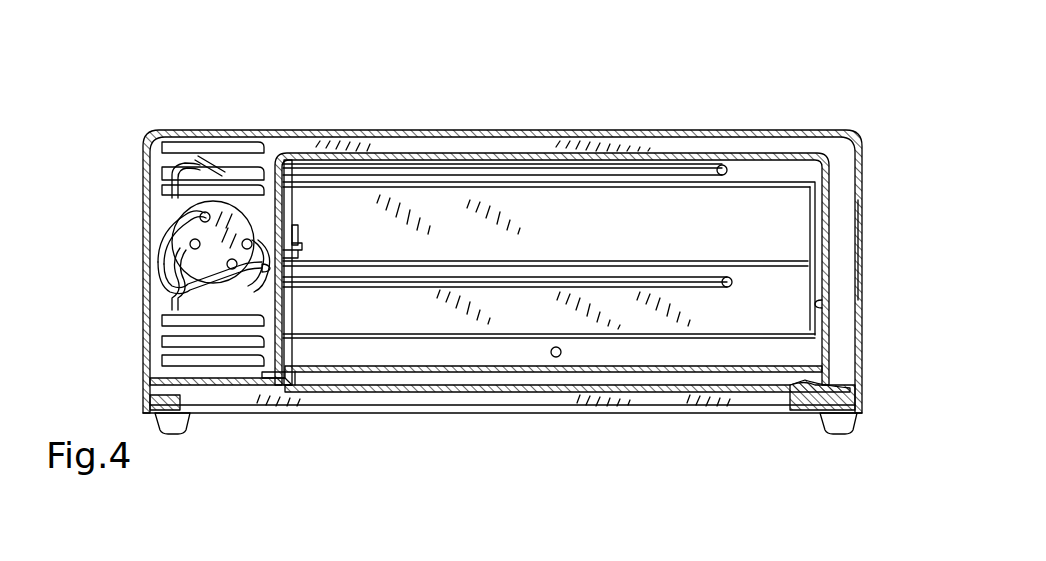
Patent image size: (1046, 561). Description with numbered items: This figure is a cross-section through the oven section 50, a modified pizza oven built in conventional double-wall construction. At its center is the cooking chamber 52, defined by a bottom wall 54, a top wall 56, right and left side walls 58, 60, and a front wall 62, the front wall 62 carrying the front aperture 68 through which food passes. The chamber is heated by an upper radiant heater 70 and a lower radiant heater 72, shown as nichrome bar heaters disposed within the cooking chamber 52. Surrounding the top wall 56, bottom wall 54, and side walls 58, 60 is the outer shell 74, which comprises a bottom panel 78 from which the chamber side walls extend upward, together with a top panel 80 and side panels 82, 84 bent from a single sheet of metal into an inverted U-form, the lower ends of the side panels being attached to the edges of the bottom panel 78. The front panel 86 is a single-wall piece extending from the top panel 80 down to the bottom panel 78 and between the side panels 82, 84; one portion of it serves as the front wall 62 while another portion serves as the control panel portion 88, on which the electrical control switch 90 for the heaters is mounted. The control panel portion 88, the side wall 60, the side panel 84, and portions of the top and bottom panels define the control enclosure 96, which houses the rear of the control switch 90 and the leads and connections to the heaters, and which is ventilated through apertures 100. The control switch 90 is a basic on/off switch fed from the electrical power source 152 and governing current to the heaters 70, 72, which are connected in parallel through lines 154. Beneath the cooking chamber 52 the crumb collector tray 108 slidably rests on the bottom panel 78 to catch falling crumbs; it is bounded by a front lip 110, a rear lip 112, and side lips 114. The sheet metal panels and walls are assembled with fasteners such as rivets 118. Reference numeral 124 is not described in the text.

The oven section 50 is at (762, 100).
The cooking chamber 52 is at (823, 130).
The bottom wall 54 is at (442, 405).
The top wall 56 is at (786, 130).
The right side wall 58 is at (300, 130).
The left side wall 60 is at (822, 304).
The front wall 62 is at (722, 400).
The front aperture 68 is at (508, 130).
The upper radiant heater 70 is at (388, 130).
The lower radiant heater 72 is at (500, 405).
The outer shell 74 is at (560, 130).
The bottom panel 78 is at (588, 400).
The top panel 80 is at (428, 130).
The left side panel 82 is at (862, 245).
The right side panel 84 is at (148, 200).
The front panel 86 is at (200, 290).
The control panel portion 88 is at (248, 130).
The electrical control switch 90 is at (200, 222).
The control enclosure 96 is at (200, 335).
The apertures 100 is at (214, 390).
The crumb collector tray 108 is at (340, 390).
The front lip 110 is at (462, 400).
The rear lip 112 is at (763, 260).
The side lips 114 is at (302, 395).
The rivets 118 is at (312, 390).
The foot 124 is at (170, 436).
The electrical power source 152 is at (300, 254).
The lines 154 is at (178, 258).